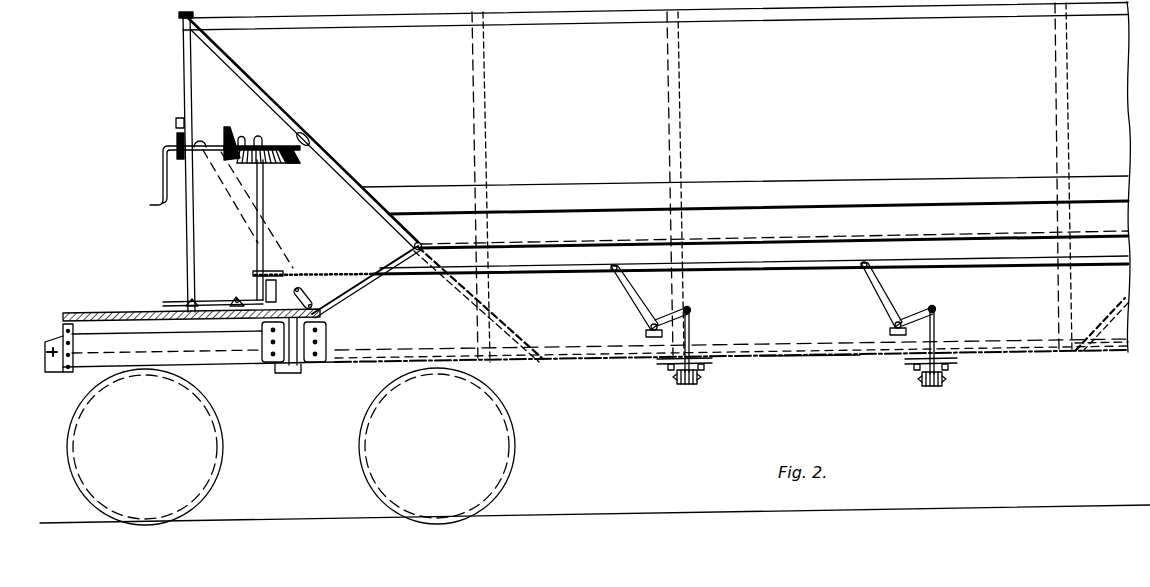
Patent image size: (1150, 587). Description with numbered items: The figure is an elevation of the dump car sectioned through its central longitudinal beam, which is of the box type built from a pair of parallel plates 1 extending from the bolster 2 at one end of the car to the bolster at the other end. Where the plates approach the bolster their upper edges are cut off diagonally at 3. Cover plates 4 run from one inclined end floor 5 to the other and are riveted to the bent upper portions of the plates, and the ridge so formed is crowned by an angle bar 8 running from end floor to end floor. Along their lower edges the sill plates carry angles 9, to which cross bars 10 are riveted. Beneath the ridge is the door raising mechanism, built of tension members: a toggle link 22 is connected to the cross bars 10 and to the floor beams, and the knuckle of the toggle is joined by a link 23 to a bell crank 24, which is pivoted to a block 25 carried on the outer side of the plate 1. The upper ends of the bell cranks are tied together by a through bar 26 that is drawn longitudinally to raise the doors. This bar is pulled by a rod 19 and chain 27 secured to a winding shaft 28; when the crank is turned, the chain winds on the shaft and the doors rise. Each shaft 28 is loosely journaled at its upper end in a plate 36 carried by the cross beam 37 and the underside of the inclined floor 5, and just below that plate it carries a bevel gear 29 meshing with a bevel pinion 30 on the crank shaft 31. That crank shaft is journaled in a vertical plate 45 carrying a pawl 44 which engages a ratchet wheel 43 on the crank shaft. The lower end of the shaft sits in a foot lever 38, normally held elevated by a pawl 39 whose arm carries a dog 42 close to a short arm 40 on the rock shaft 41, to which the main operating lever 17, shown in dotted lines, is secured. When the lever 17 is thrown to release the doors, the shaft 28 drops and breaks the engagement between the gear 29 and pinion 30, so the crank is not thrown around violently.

The parallel plates 1 is at (588, 263).
The bolster 2 is at (294, 368).
The diagonally cut upper edge 3 is at (396, 260).
The cover plates 4 is at (774, 231).
The inclined end floor 5 is at (504, 313).
The angle bar 8 is at (744, 195).
The angles 9 is at (797, 352).
The cross bars 10 is at (668, 366).
The operating lever 17 is at (232, 198).
The rod 19 is at (691, 264).
The toggle link 22 is at (811, 391).
The link 23 is at (690, 330).
The bell crank 24 is at (638, 308).
The block 25 is at (764, 334).
The through bar 26 is at (858, 266).
The chain 27 is at (372, 272).
The winding shaft 28 is at (265, 204).
The bevel gear 29 is at (285, 163).
The bevel pinion 30 is at (232, 136).
The crank shaft 31 is at (165, 155).
The plate 36 is at (264, 141).
The cross beam 37 is at (310, 143).
The foot lever 38 is at (240, 300).
The pawl 39 is at (283, 274).
The short arm 40 is at (304, 290).
The rock shaft 41 is at (318, 314).
The dog 42 is at (395, 258).
The ratchet wheel 43 is at (179, 162).
The pawl 44 is at (176, 123).
The vertical plate 45 is at (184, 83).